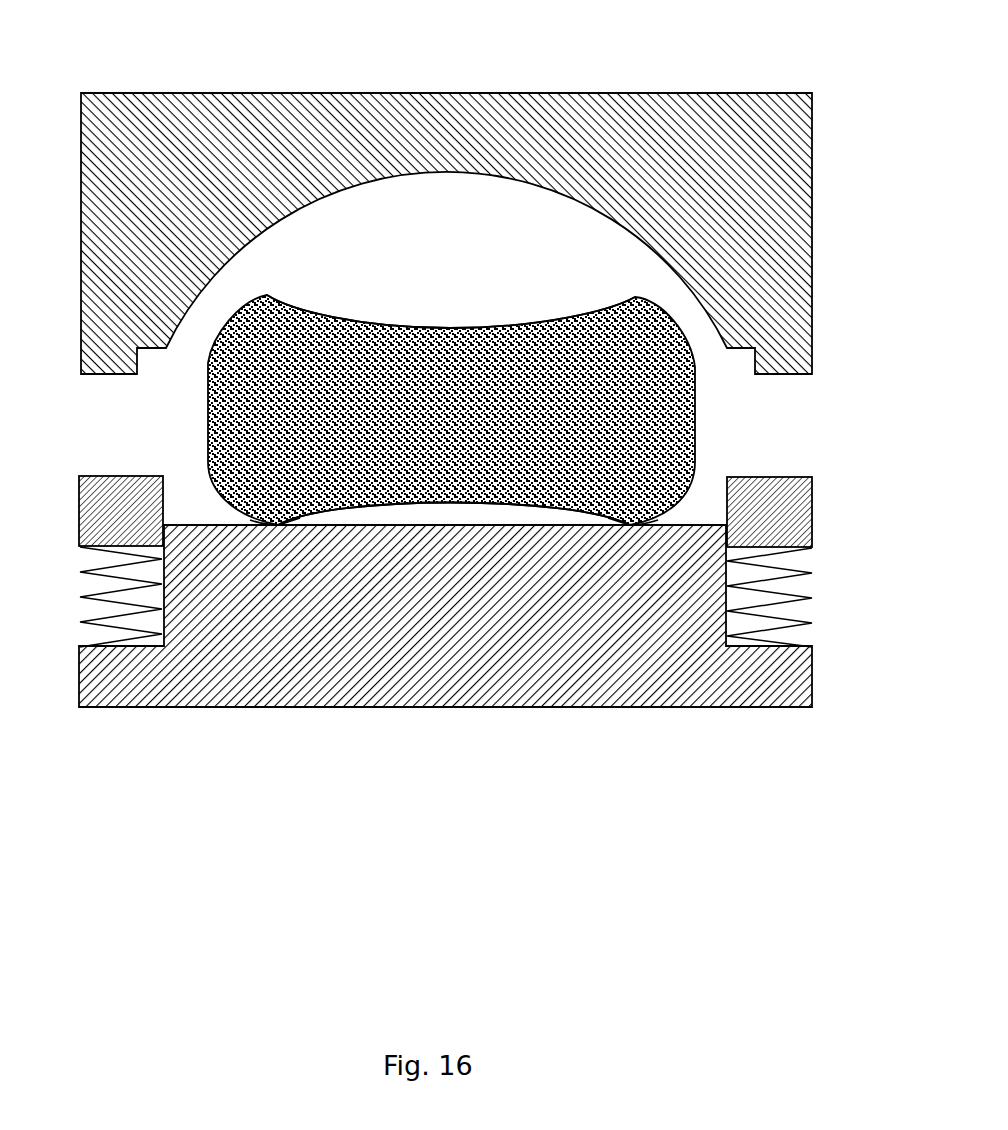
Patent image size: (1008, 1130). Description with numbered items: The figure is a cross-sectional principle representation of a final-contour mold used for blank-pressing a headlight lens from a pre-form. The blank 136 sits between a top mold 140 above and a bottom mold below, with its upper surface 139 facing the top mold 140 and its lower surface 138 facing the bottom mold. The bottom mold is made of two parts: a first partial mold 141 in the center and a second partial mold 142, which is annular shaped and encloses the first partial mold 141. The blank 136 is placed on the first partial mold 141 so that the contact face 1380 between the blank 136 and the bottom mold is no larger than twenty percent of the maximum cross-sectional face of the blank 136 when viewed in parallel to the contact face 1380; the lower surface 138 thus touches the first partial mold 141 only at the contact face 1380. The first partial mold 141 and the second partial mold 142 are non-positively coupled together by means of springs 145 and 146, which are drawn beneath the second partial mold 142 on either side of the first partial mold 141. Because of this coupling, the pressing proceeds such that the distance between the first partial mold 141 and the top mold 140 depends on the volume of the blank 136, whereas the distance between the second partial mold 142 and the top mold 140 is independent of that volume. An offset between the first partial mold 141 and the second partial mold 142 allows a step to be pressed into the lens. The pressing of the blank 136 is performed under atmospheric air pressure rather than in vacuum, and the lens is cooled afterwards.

The blank 136 is at (465, 392).
The bottom surface of preform 138 is at (430, 500).
The top surface of preform 139 is at (353, 323).
The top mold 140 is at (643, 132).
The first partial mold 141 is at (475, 653).
The second partial mold 142 is at (108, 517).
The spring 145 is at (147, 622).
The spring 146 is at (765, 622).
The contact face 1380 is at (278, 525).